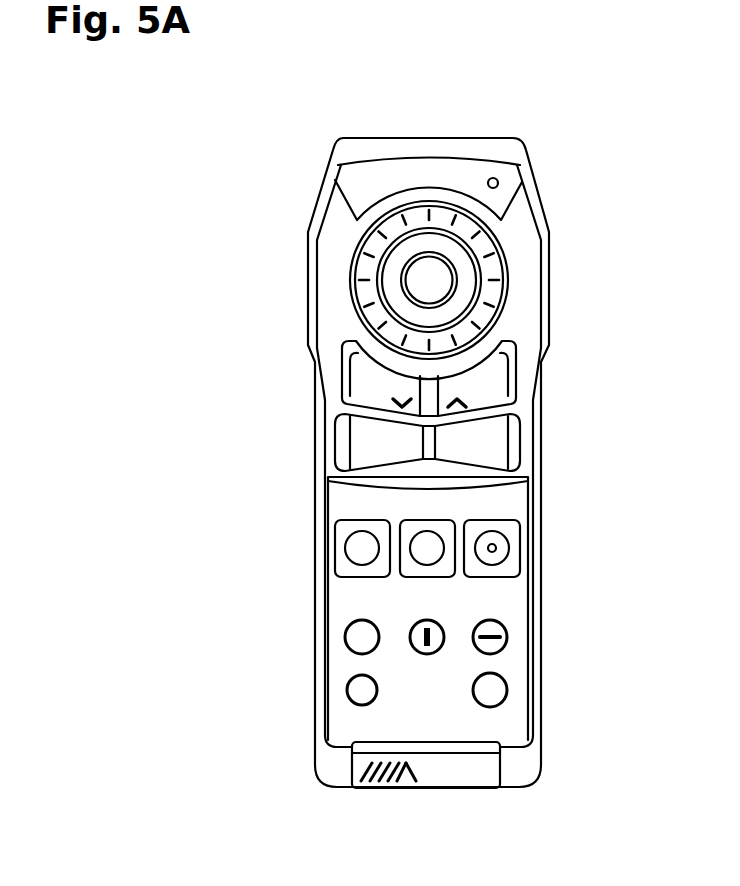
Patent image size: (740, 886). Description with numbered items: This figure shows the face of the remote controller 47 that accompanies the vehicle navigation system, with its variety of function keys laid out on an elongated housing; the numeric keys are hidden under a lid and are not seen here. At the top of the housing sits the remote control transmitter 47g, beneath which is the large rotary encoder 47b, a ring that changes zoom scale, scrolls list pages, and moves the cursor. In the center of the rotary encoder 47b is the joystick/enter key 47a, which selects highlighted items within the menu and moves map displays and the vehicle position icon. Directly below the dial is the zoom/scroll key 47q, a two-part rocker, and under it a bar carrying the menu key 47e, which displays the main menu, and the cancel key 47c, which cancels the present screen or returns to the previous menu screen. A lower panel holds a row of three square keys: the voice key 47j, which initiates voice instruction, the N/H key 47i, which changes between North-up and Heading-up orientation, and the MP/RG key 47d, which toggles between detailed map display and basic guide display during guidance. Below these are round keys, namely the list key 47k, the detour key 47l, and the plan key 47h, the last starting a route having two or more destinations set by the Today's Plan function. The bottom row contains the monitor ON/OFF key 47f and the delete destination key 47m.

The remote controller 47 is at (434, 76).
The remote control transmitter 47g is at (412, 137).
The joystick/enter key 47a is at (409, 262).
The rotary encoder 47b is at (508, 270).
The zoom/scroll key 47q is at (484, 400).
The menu key 47e is at (347, 447).
The cancel key 47c is at (520, 447).
The voice key 47j is at (352, 540).
The N/H key 47i is at (430, 535).
The MP/RG key 47d is at (503, 558).
The list key 47k is at (348, 638).
The detour key 47l is at (410, 623).
The plan key 47h is at (507, 637).
The monitor ON/OFF key 47f is at (348, 690).
The delete destination key 47m is at (503, 690).